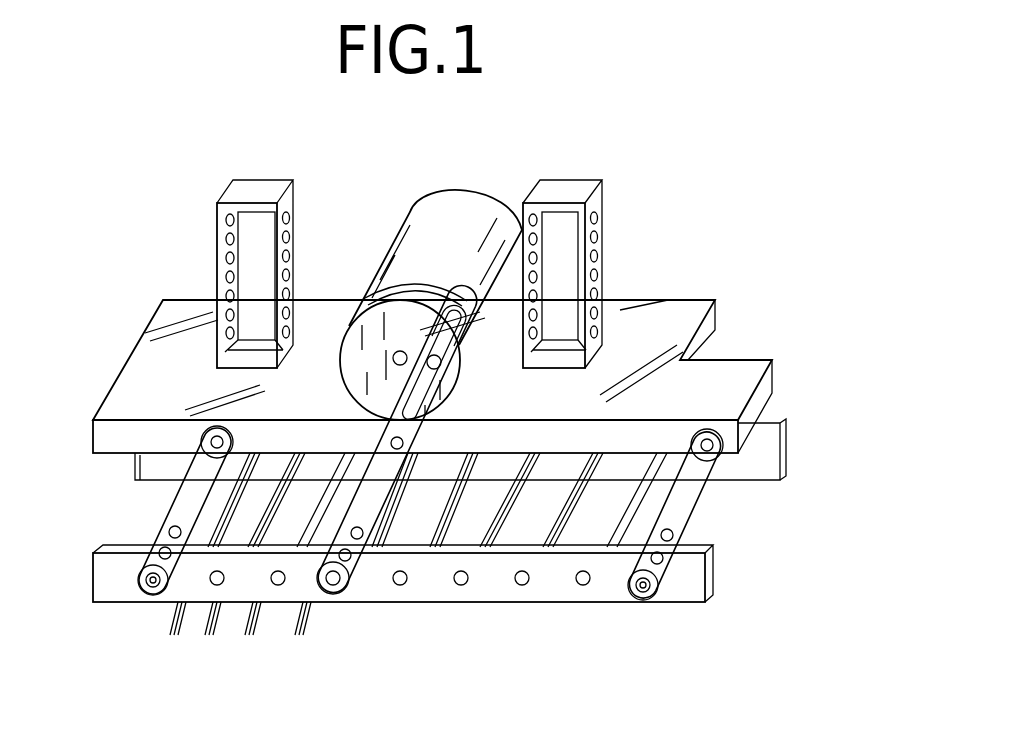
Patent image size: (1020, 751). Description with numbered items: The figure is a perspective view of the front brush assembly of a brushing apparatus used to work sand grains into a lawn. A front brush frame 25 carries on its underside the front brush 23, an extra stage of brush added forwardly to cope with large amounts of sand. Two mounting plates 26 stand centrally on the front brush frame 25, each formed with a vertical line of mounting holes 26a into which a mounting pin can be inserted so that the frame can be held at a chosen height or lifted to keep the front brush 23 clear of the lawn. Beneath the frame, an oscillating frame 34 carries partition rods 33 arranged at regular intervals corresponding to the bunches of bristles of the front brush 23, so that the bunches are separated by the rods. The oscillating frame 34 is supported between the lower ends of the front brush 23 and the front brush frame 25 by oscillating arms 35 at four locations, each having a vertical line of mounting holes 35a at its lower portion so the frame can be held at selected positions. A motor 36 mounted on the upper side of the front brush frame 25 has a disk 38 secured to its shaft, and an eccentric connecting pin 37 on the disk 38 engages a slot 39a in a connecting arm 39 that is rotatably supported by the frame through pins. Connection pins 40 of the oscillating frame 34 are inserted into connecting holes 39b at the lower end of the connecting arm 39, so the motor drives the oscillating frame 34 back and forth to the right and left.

The front brush 23 is at (310, 617).
The front brush frame 25 is at (687, 317).
The mounting plate 26 is at (258, 182).
The mounting hole 26a is at (287, 233).
The partition rod 33 is at (435, 527).
The oscillating frame 34 is at (563, 592).
The oscillating arm 35 is at (173, 500).
The mounting hole 35a is at (143, 555).
The motor 36 is at (440, 208).
The eccentric connecting pin 37 is at (465, 368).
The disk 38 is at (360, 338).
The connecting arm 39 is at (365, 450).
The slot 39a is at (428, 312).
The connecting hole 39b is at (365, 553).
The connection pin 40 is at (318, 580).